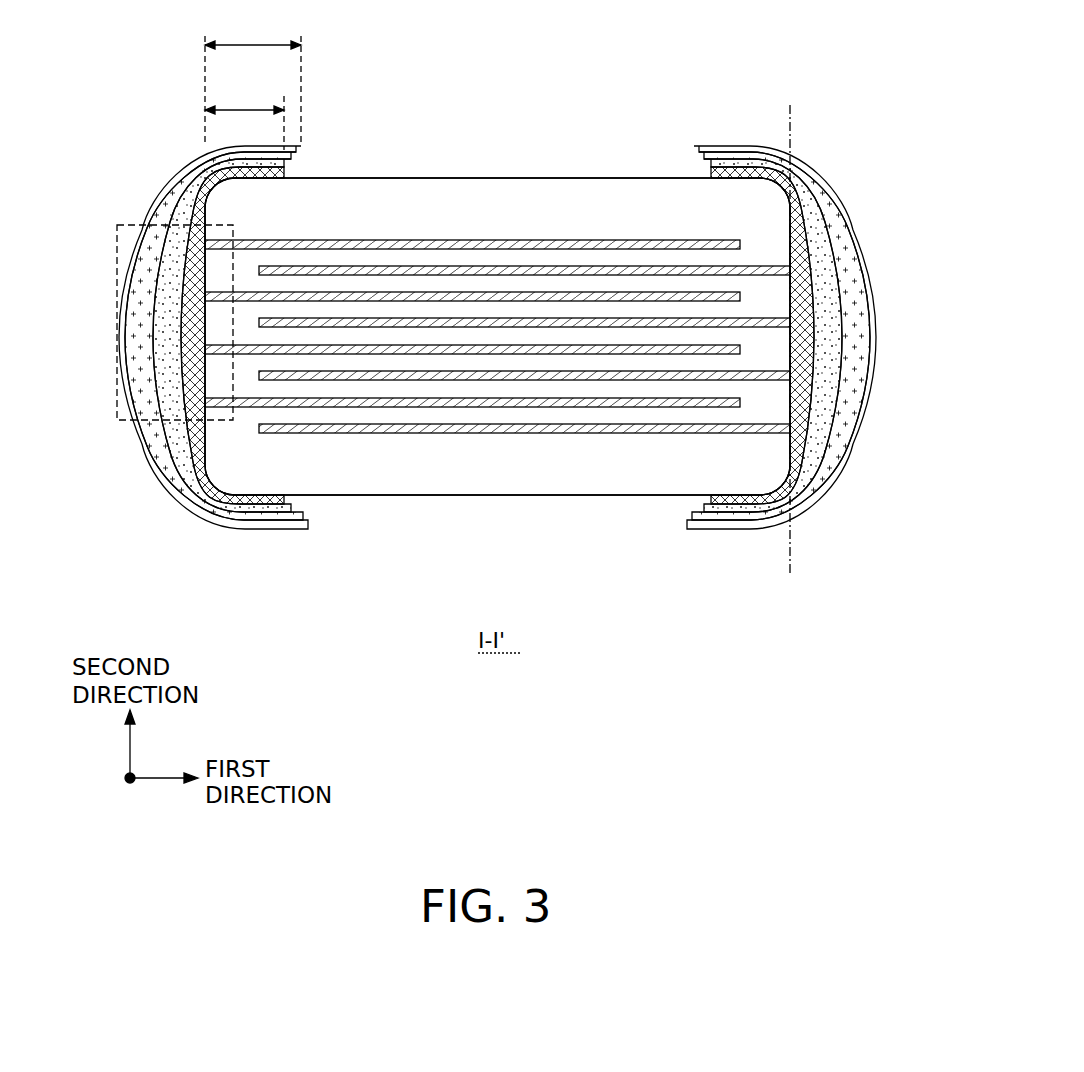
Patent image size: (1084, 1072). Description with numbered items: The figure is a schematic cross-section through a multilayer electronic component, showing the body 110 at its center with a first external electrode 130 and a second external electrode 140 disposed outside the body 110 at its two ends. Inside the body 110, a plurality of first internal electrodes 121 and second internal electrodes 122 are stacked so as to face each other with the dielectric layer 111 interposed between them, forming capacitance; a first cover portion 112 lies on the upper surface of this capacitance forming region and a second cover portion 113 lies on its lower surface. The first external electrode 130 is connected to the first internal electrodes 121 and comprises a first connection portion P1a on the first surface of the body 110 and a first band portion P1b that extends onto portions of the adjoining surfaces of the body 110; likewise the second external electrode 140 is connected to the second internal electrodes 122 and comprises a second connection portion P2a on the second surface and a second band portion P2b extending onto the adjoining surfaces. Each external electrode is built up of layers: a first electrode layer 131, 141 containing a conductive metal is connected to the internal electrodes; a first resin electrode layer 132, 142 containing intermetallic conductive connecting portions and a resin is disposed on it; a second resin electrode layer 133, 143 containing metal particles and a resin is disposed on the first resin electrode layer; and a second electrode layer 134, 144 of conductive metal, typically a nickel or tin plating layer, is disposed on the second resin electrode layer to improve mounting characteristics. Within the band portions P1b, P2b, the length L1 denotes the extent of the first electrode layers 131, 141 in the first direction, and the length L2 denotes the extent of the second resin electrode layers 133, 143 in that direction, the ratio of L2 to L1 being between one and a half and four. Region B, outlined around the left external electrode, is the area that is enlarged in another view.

The body 110 is at (607, 178).
The dielectric layer 111 is at (570, 258).
The first cover portion 112 is at (368, 208).
The second cover portion 113 is at (446, 482).
The first internal electrode 121 is at (428, 245).
The second internal electrode 122 is at (498, 270).
The first external electrode 130 is at (406, 471).
The first electrode layer 131 is at (180, 293).
The first resin electrode layer 132 is at (167, 320).
The second resin electrode layer 133 is at (140, 343).
The second electrode layer 134 is at (125, 378).
The second external electrode 140 is at (813, 471).
The first electrode layer 141 is at (813, 293).
The first resin electrode layer 142 is at (828, 320).
The second resin electrode layer 143 is at (858, 344).
The second electrode layer 144 is at (872, 378).
The region B is at (127, 223).
The length of first electrode layers of band portions L1 is at (244, 117).
The length of second resin electrode layers of band portions L2 is at (253, 83).
The first connection portion P1a is at (140, 461).
The first band portion P1b is at (313, 157).
The second connection portion P2a is at (860, 464).
The second band portion P2b is at (717, 118).